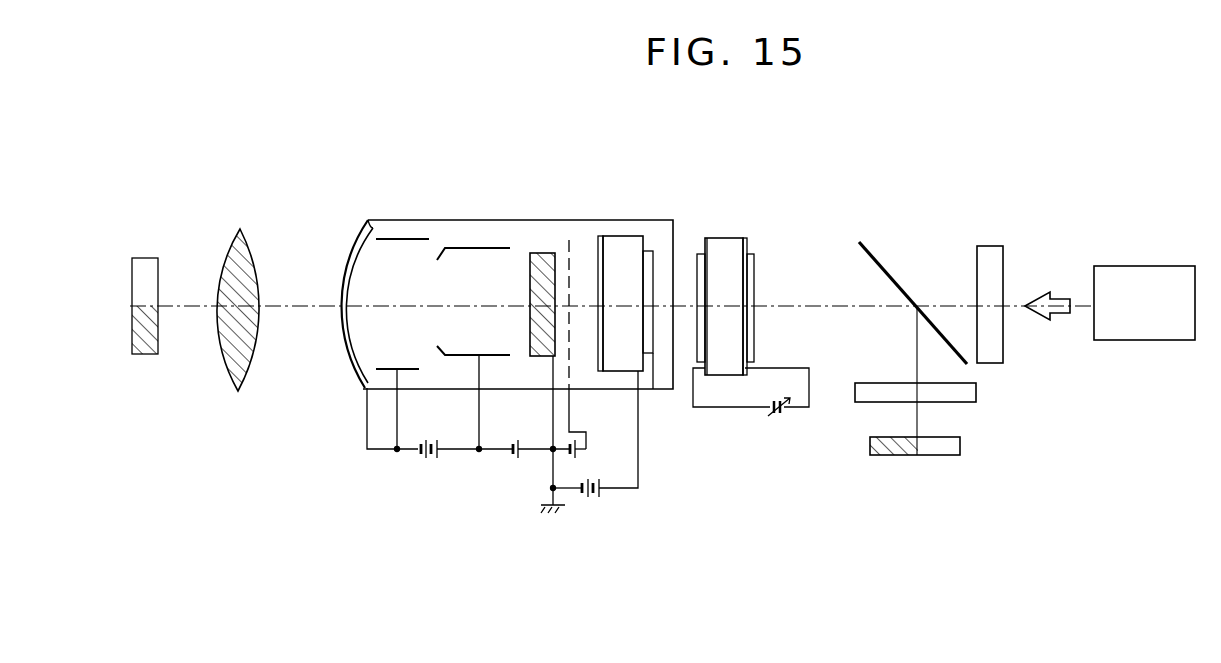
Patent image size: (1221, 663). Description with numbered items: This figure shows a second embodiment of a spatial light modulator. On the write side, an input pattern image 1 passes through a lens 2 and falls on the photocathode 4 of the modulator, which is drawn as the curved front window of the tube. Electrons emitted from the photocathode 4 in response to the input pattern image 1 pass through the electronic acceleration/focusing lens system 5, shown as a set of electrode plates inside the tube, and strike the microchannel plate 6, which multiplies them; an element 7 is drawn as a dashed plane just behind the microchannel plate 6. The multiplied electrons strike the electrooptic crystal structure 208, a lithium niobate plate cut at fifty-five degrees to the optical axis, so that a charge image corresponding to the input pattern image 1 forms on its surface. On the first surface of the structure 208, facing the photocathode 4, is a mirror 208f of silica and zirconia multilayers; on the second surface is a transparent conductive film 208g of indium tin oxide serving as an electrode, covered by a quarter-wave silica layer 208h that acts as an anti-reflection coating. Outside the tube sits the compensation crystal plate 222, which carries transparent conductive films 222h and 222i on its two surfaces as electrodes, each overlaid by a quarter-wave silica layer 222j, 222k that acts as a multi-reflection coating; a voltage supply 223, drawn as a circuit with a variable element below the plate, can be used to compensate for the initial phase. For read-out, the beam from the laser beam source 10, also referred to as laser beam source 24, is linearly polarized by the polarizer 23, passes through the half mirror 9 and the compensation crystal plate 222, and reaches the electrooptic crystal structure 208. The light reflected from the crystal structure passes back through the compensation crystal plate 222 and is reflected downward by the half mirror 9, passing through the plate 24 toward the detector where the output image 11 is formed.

The input pattern image 1 is at (153, 258).
The lens 2 is at (248, 243).
The photocathode 4 is at (377, 232).
The electronic acceleration/focusing lens system 5 is at (497, 237).
The microchannel plate 6 is at (537, 253).
The mesh electrode 7 is at (568, 250).
The electrooptic crystal structure 208 is at (627, 235).
The mirror 208f is at (598, 242).
The transparent conductive film 208g is at (648, 242).
The SiO2 layer 208h is at (658, 352).
The compensation crystal plate 222 is at (727, 239).
The transparent conductive film 222h is at (707, 240).
The transparent conductive film 222i is at (752, 245).
The SiO2 layer 222j is at (698, 258).
The SiO2 layer 222k is at (757, 275).
The voltage supply 223 is at (776, 416).
The half mirror 9 is at (881, 262).
The polarizer 23 is at (987, 246).
The laser beam source 10 is at (1118, 266).
The laser beam source 24 is at (976, 393).
The output image 11 is at (960, 447).